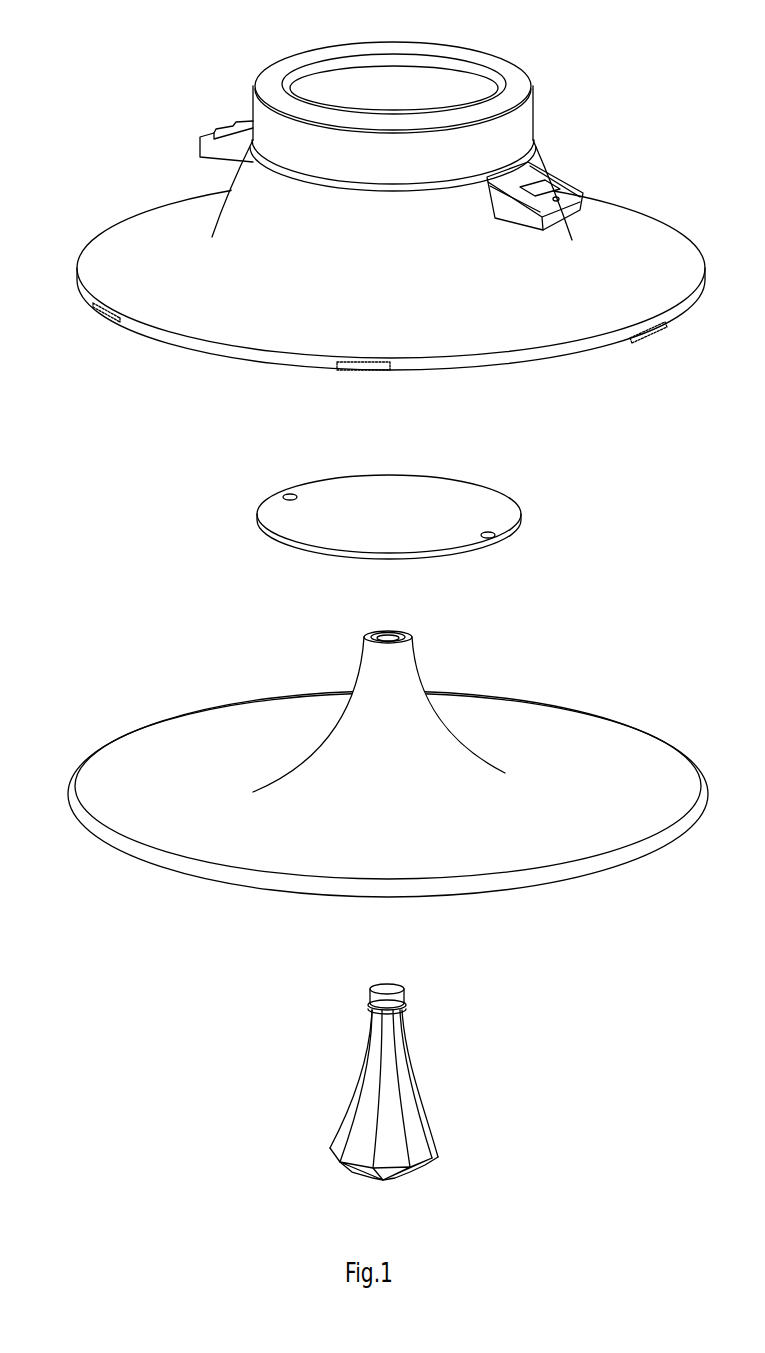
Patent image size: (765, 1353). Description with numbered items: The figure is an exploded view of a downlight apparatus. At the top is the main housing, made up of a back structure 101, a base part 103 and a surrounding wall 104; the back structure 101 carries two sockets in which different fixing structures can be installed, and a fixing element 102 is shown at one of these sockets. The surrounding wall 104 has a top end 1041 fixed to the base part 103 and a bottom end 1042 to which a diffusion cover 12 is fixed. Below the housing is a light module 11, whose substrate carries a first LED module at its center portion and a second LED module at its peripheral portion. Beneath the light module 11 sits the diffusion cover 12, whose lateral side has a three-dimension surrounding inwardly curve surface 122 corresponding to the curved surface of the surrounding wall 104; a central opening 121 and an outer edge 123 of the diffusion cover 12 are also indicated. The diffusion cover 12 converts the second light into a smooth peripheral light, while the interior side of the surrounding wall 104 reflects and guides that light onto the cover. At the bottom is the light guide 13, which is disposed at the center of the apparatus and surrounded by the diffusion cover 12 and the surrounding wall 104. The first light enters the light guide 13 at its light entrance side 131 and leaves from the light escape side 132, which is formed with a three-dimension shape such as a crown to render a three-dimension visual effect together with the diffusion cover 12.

The back structure 101 is at (522, 85).
The right mounting bracket 102 is at (540, 173).
The base part 103 is at (290, 175).
The surrounding wall 104 is at (230, 213).
The top end 1041 is at (253, 163).
The bottom end 1042 is at (207, 345).
The light module 11 is at (487, 518).
The diffusion cover 12 is at (388, 726).
The top opening 121 is at (383, 637).
The inwardly curve surface 122 is at (430, 697).
The reflector edge 123 is at (590, 865).
The light guide 13 is at (448, 1085).
The light entrance side 131 is at (390, 995).
The light escape side 132 is at (390, 1168).